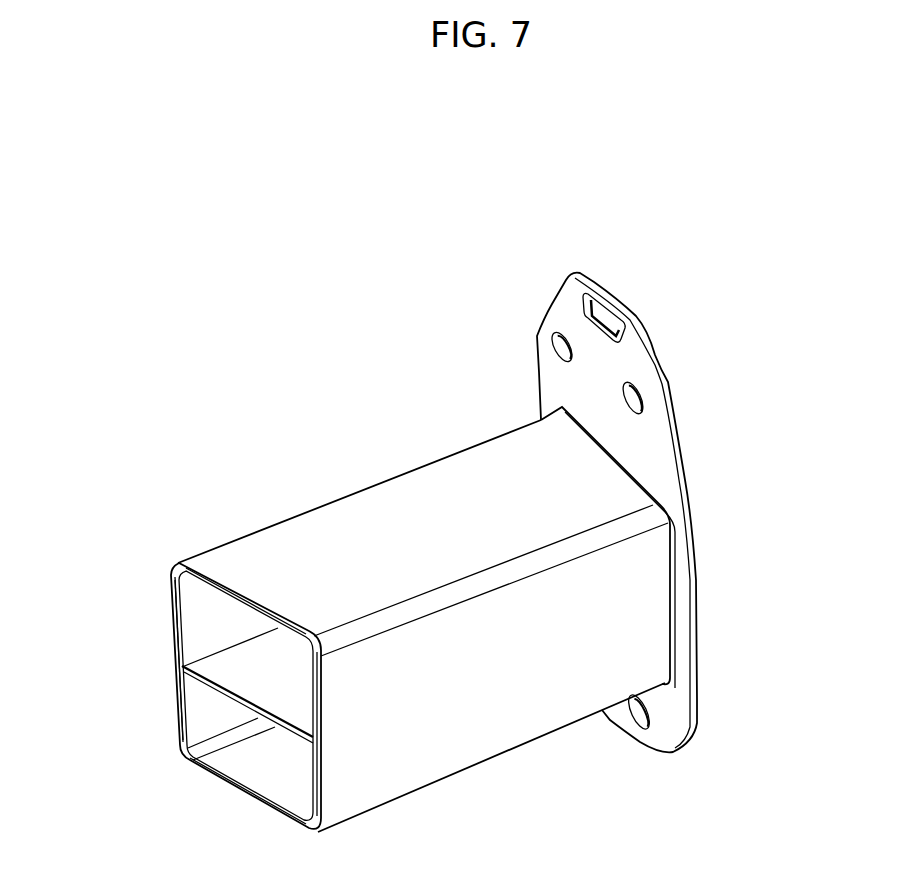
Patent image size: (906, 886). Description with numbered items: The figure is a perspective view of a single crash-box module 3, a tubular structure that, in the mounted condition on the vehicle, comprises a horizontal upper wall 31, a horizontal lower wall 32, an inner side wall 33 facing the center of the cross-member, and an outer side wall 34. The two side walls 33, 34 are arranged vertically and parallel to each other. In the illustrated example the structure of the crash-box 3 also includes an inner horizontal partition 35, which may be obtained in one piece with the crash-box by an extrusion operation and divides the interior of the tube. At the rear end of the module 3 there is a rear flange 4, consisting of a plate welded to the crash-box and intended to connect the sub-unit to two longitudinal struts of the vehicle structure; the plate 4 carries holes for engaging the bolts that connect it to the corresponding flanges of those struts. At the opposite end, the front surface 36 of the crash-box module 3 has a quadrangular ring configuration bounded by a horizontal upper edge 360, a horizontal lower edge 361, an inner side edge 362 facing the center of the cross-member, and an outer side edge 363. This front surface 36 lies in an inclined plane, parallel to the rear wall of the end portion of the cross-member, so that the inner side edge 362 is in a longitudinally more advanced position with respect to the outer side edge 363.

The crash-box module 3 is at (378, 631).
The rear flange 4 is at (683, 448).
The horizontal upper wall 31 is at (483, 456).
The horizontal lower wall 32 is at (300, 772).
The inner side wall 33 is at (190, 593).
The outer side wall 34 is at (527, 723).
The inner horizontal partition 35 is at (300, 690).
The front surface 36 is at (178, 776).
The horizontal upper edge 360 is at (262, 610).
The horizontal lower edge 361 is at (270, 812).
The inner side edge 362 is at (172, 647).
The outer side edge 363 is at (322, 800).